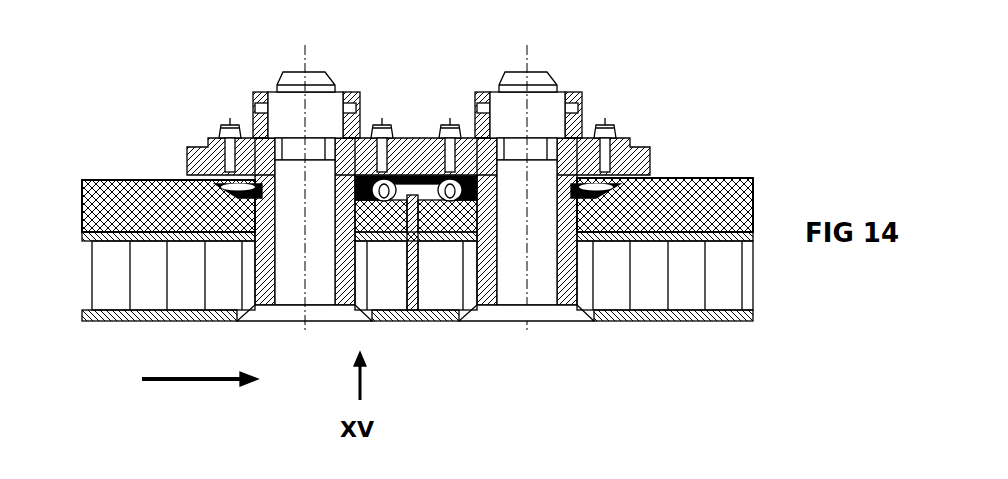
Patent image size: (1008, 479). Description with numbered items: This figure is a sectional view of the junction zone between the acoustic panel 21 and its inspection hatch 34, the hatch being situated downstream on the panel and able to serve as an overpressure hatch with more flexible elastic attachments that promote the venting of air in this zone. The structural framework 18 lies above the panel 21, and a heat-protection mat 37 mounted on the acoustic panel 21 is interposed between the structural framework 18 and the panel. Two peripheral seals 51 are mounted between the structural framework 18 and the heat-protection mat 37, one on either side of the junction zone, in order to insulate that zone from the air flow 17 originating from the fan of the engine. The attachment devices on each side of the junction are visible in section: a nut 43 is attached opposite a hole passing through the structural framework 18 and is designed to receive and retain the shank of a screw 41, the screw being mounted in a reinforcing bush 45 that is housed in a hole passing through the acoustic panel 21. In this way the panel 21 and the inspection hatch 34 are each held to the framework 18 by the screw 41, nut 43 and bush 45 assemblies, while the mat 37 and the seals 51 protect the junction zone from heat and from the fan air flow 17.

The air flow 17 is at (200, 369).
The structural framework 18 is at (143, 140).
The acoustic panel 21 is at (145, 280).
The inspection hatch 34 is at (686, 278).
The heat-protection mat 37 is at (727, 175).
The screw 41 is at (547, 325).
The nut 43 is at (586, 86).
The reinforcing bush 45 is at (477, 277).
The peripheral seals 51 is at (413, 63).